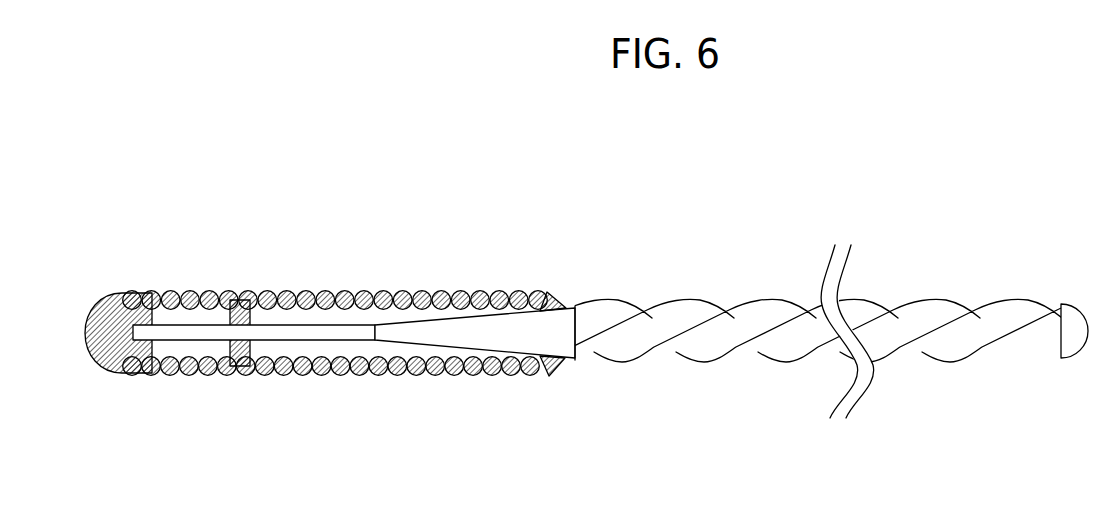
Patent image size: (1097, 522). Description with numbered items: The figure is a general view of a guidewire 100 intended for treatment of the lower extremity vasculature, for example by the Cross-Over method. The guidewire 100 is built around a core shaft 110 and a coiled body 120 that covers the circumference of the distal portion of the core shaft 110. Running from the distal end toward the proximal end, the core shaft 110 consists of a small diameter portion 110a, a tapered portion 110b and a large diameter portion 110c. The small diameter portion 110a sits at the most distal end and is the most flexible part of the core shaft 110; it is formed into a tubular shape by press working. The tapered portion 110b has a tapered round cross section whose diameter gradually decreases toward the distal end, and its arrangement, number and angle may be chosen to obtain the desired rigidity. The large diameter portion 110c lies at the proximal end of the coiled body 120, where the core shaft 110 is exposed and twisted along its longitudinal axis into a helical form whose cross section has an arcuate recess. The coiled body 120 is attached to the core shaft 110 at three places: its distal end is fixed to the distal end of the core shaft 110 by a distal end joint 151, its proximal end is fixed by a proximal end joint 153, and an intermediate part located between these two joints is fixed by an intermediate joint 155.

The guidewire 100 is at (481, 231).
The core shaft 110 is at (988, 402).
The small diameter portion 110a is at (158, 335).
The tapered portion 110b is at (469, 334).
The large diameter portion 110c is at (728, 336).
The coiled body 120 is at (288, 291).
The distal end joint 151 is at (114, 320).
The proximal end joint 153 is at (555, 300).
The intermediate joint 155 is at (249, 352).